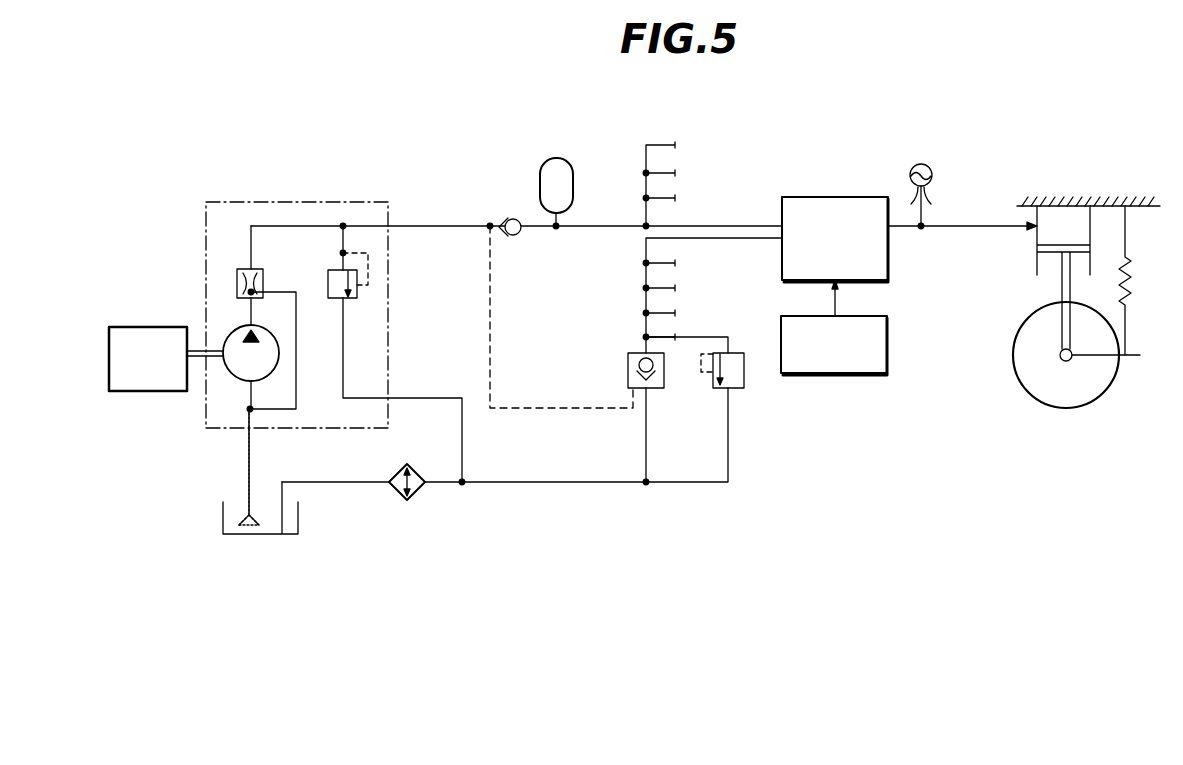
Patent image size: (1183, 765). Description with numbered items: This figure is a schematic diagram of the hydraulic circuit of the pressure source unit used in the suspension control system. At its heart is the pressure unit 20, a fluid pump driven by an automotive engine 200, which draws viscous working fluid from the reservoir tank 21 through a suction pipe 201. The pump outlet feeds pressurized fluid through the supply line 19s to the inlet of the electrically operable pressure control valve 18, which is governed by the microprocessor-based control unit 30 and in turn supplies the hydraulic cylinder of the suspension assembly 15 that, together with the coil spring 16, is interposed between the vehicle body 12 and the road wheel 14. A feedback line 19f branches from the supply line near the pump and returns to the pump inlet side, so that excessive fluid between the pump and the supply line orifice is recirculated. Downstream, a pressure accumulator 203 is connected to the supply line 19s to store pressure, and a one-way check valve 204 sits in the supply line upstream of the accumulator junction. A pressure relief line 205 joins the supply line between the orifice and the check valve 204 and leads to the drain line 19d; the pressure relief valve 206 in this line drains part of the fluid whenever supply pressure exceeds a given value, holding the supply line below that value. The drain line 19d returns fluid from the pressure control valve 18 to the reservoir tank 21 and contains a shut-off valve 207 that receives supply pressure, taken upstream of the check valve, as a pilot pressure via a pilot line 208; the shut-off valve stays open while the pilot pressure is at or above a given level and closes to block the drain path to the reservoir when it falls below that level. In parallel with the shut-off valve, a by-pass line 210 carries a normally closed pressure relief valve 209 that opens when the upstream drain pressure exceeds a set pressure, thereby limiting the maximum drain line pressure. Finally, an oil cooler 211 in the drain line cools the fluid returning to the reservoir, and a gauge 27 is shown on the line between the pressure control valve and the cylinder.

The vehicle body 12 is at (1093, 204).
The road wheel 14 is at (1063, 408).
The suspension assembly 15 is at (1035, 246).
The coil spring 16 is at (1130, 288).
The pressure control valve 18 is at (829, 197).
The supply line 19s is at (417, 224).
The drain line 19d is at (585, 485).
The feedback line 19f is at (296, 331).
The pressure unit 20 is at (231, 372).
The reservoir tank 21 is at (222, 513).
The pressure gauge / output line 27 is at (917, 231).
The control unit 30 is at (843, 374).
The automotive engine 200 is at (146, 327).
The suction pipe 201 is at (253, 466).
The pressure accumulator 203 is at (573, 176).
The one-way check valve 204 is at (507, 216).
The pressure relief line 205 is at (343, 358).
The pressure relief valve 206 is at (357, 295).
The shut-off valve 207 is at (628, 380).
The pilot line 208 is at (490, 355).
The pressure relief valve 209 is at (744, 390).
The by-pass line 210 is at (728, 435).
The oil cooler 211 is at (418, 494).